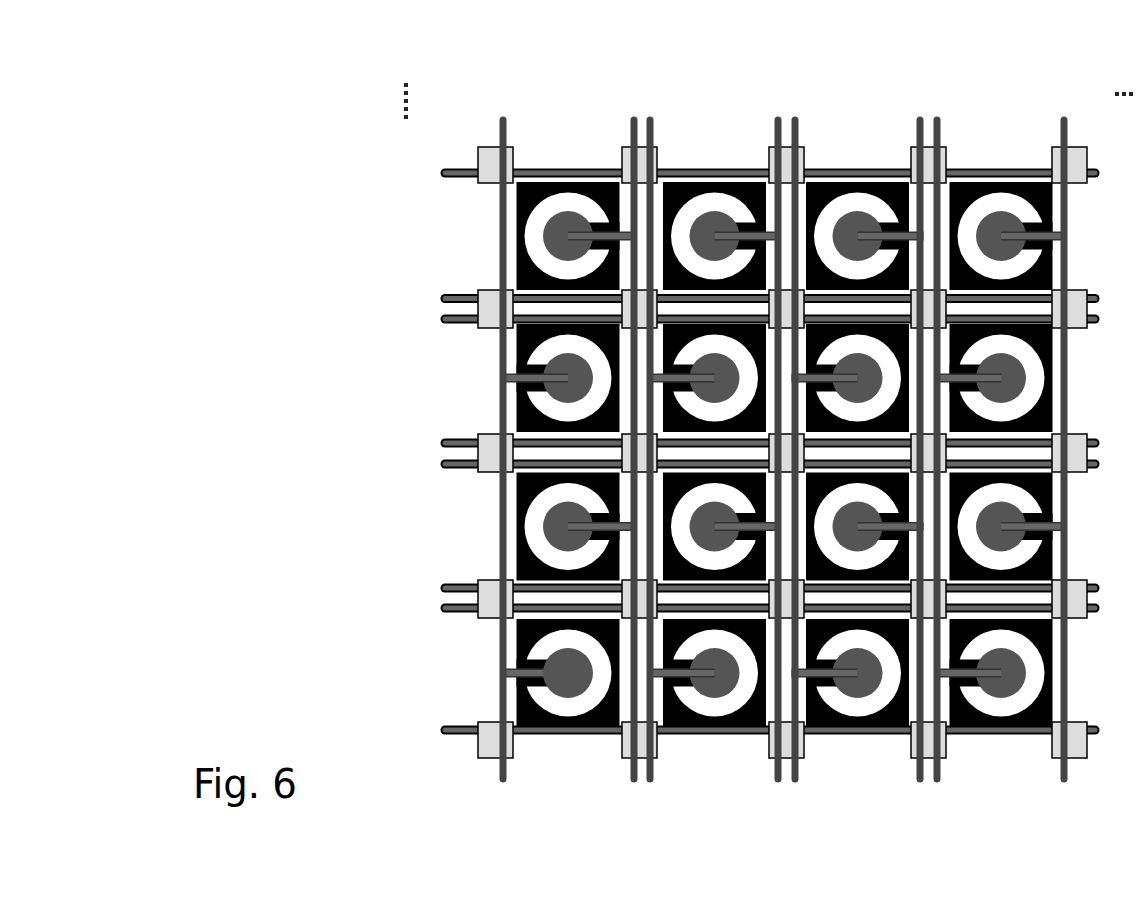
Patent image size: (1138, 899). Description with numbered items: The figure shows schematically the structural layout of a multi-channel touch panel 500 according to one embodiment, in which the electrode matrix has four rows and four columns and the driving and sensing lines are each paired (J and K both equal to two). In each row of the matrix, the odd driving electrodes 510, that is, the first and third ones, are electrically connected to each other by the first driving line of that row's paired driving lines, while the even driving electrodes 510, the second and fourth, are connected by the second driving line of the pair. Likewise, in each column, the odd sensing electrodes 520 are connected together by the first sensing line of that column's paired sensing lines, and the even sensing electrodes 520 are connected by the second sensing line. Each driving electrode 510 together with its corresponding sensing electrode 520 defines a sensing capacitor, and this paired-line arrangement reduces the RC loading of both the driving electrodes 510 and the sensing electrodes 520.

The multi-channel touch panel 500 is at (818, 52).
The driving electrode 510 is at (593, 722).
The sensing electrode 520 is at (557, 663).